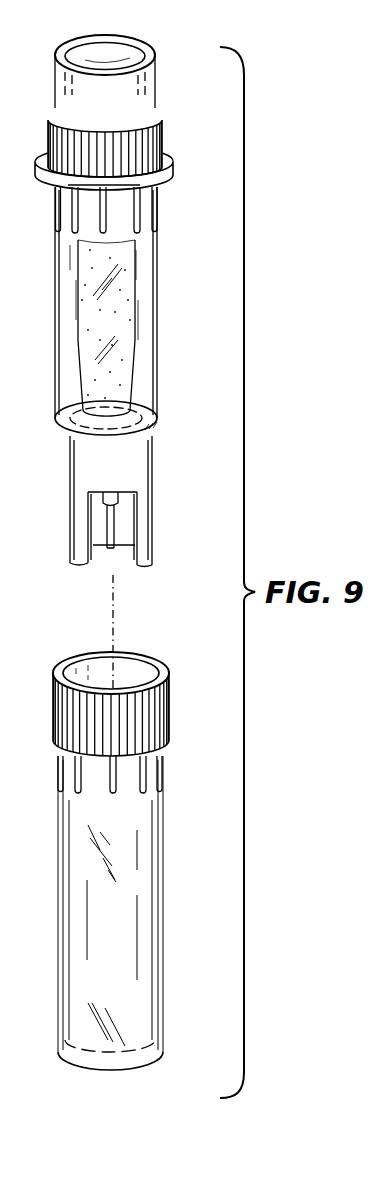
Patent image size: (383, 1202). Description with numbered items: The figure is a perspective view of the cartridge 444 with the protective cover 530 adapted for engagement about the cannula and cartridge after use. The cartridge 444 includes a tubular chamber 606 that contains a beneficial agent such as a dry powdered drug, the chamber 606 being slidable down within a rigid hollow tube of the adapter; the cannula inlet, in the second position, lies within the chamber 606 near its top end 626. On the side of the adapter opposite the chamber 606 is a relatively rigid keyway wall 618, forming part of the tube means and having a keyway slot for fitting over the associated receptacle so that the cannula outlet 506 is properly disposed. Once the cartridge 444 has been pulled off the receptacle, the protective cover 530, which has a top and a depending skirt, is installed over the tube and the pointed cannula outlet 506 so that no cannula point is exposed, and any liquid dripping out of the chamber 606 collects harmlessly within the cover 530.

The cartridge 444 is at (272, 572).
The top end of the chamber 626 is at (123, 63).
The tubular chamber 606 is at (138, 306).
The keyway wall 618 is at (152, 468).
The cannula outlet 506 is at (108, 550).
The protective cover 530 is at (160, 945).